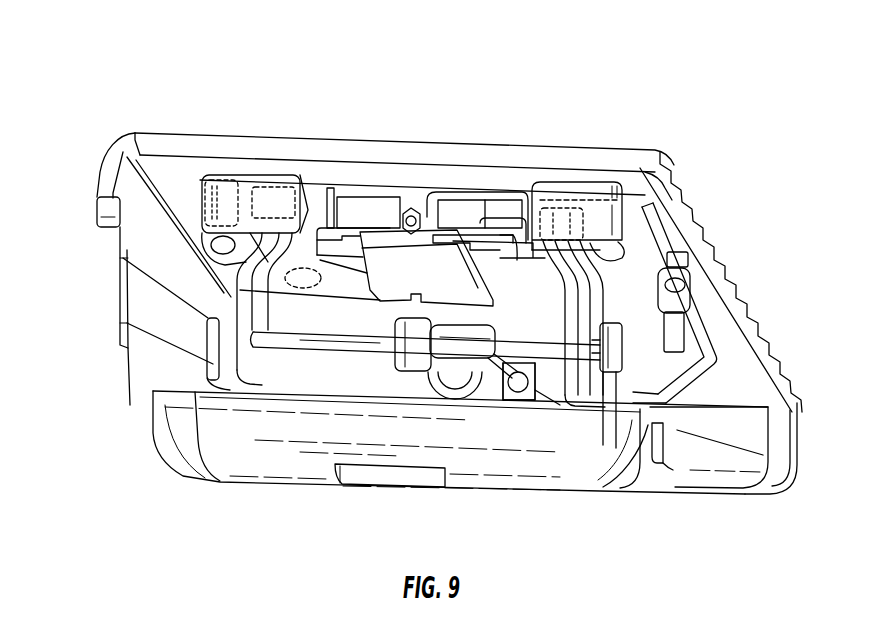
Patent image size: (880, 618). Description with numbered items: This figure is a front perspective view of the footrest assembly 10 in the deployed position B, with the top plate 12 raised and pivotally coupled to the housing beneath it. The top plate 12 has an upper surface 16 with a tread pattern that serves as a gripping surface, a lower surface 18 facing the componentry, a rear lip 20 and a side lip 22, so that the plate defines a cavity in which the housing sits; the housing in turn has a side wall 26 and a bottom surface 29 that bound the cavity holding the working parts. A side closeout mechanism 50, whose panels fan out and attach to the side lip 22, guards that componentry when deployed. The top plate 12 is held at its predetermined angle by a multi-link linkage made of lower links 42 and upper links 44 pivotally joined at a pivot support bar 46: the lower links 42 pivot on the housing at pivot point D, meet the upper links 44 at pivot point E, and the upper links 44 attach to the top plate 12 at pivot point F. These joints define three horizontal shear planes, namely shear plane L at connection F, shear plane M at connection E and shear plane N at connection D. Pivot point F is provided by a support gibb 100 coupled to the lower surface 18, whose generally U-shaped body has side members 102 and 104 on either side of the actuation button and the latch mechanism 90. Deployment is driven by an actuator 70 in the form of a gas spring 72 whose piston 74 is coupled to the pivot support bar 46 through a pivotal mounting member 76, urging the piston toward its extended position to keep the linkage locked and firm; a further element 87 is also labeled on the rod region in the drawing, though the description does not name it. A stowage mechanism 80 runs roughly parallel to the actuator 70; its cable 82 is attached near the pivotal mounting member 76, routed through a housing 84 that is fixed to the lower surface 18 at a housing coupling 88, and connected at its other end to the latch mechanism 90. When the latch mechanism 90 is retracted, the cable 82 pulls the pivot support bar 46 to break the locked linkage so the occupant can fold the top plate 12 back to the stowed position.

The footrest assembly 10 is at (633, 68).
The top plate 12 is at (200, 128).
The upper surface 16 is at (440, 148).
The lower surface 18 is at (153, 163).
The rear lip 20 is at (785, 462).
The side lip 22 is at (100, 209).
The side wall 26 is at (706, 479).
The bottom surface 29 is at (287, 463).
The lower link 42 is at (230, 380).
The upper link 44 is at (593, 306).
The pivot support bar 46 is at (343, 340).
The side closeout mechanism 50 is at (110, 310).
The actuator 70 is at (474, 405).
The gas spring 72 is at (505, 392).
The piston 74 is at (437, 372).
The pivotal mounting member 76 is at (403, 352).
The stowage mechanism 80 is at (718, 373).
The cable 82 is at (443, 207).
The housing 84 is at (713, 393).
The rod 87 is at (483, 331).
The housing coupling 88 is at (696, 309).
The latch mechanism 90 is at (467, 210).
The support gibb 100 is at (338, 303).
The side member 102 is at (247, 183).
The side member 104 is at (603, 222).
The deployed position B is at (143, 133).
The pivot point D is at (671, 430).
The pivot point E is at (630, 340).
The pivot point F is at (280, 193).
The shear plane L is at (585, 228).
The shear plane M is at (622, 346).
The shear plane N is at (658, 444).